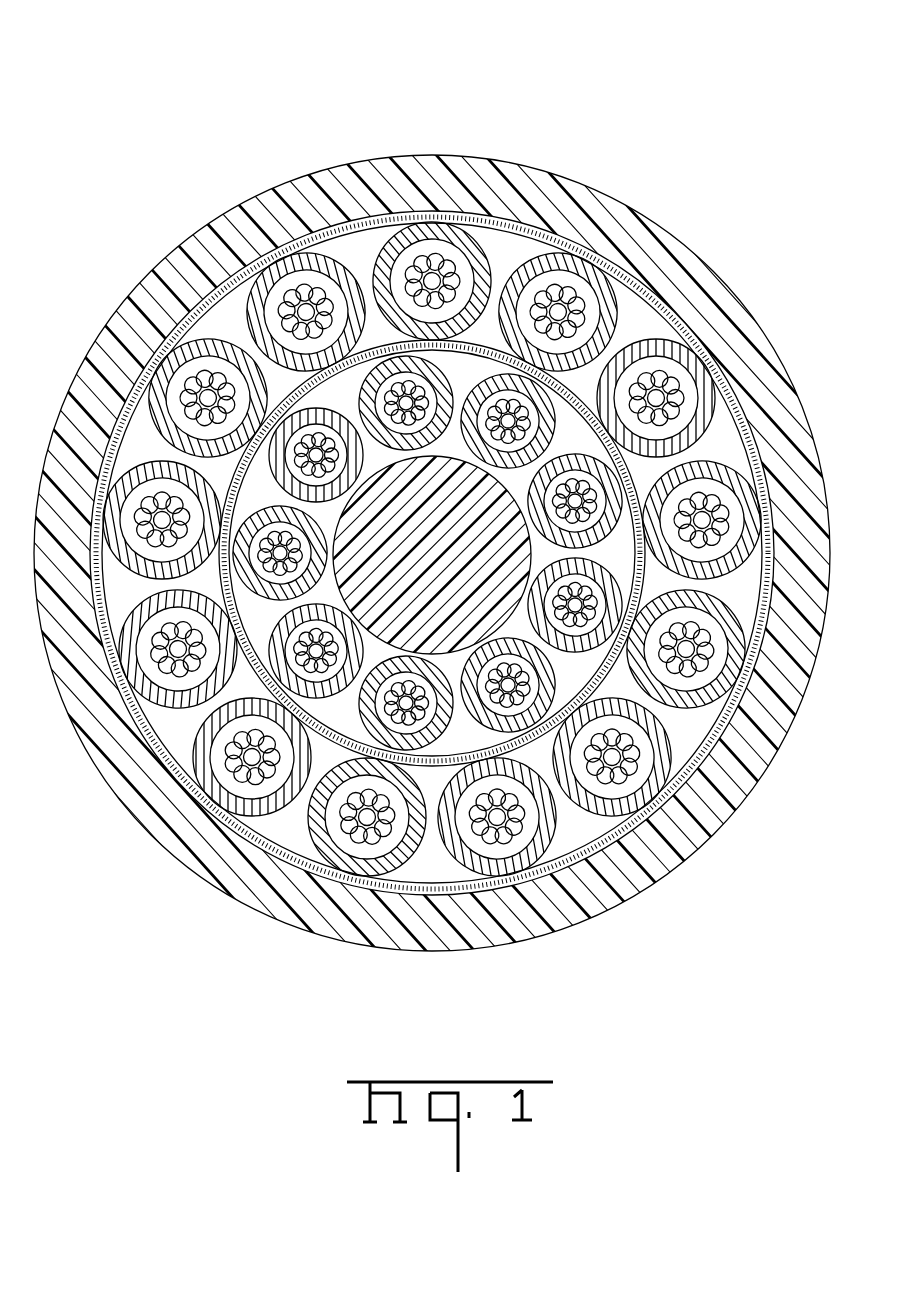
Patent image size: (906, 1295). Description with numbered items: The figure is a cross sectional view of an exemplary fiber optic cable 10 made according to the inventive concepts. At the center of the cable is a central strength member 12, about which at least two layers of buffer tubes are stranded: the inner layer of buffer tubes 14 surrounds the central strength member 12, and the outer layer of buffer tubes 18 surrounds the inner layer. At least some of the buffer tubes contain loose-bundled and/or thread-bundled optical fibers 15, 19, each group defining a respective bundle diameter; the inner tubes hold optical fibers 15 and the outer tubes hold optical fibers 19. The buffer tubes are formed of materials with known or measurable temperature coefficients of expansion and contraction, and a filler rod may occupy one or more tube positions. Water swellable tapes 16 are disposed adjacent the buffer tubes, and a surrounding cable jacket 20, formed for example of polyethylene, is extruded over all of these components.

The fiber optic cable 10 is at (263, 115).
The central strength member 12 is at (426, 592).
The buffer tubes 14 is at (307, 695).
The optical fibers 15 is at (193, 798).
The water swellable tapes 16 is at (237, 635).
The buffer tubes 18 is at (130, 475).
The optical fibers 19 is at (152, 462).
The cable jacket 20 is at (695, 805).